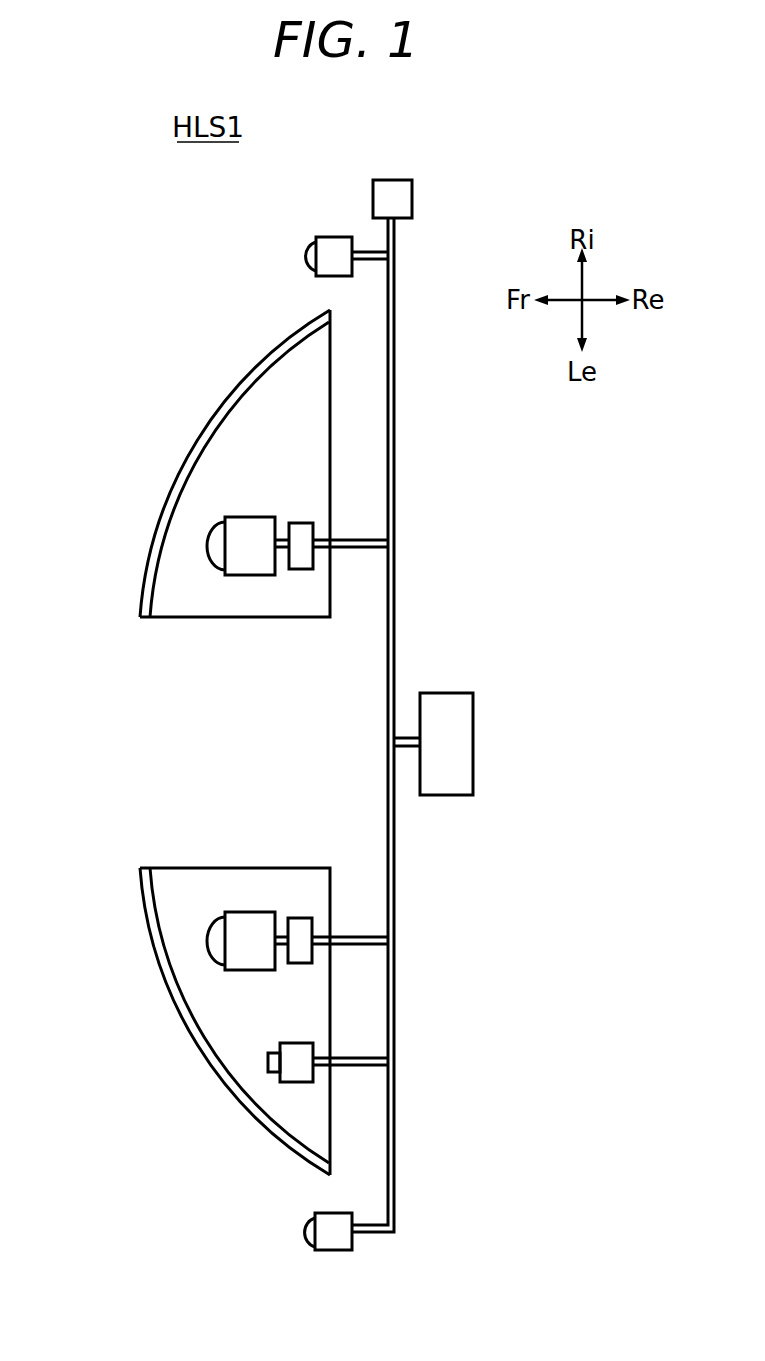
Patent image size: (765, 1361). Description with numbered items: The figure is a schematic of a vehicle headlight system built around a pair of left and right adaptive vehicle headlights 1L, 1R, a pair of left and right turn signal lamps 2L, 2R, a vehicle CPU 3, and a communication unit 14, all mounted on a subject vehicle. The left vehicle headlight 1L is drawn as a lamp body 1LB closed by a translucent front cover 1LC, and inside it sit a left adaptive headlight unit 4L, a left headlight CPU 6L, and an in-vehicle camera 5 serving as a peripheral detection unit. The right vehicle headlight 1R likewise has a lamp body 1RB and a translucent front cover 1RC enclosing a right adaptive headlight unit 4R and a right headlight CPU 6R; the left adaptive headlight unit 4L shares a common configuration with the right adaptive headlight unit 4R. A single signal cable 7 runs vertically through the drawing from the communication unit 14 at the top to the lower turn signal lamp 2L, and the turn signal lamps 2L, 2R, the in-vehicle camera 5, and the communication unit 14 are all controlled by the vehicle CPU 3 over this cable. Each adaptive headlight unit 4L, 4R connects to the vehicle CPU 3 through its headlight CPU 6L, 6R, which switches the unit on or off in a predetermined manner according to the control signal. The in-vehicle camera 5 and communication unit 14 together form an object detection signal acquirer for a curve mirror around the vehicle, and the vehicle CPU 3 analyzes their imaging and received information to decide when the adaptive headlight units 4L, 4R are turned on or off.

The communication unit 14 is at (393, 179).
The right turn signal lamp 2R is at (332, 236).
The left turn signal lamp 2L is at (333, 1252).
The right vehicle headlight 1R is at (228, 479).
The left vehicle headlight 1L is at (202, 999).
The front cover 1RC is at (276, 345).
The front cover 1LC is at (276, 1136).
The lamp body 1RB is at (268, 617).
The lamp body 1LB is at (270, 867).
The right adaptive headlight unit 4R is at (250, 516).
The left adaptive headlight unit 4L is at (245, 911).
The right headlight CPU 6R is at (302, 522).
The left headlight CPU 6L is at (300, 917).
The vehicle CPU 3 is at (473, 740).
The in-vehicle camera 5 is at (293, 1042).
The signal cable 7 is at (395, 975).